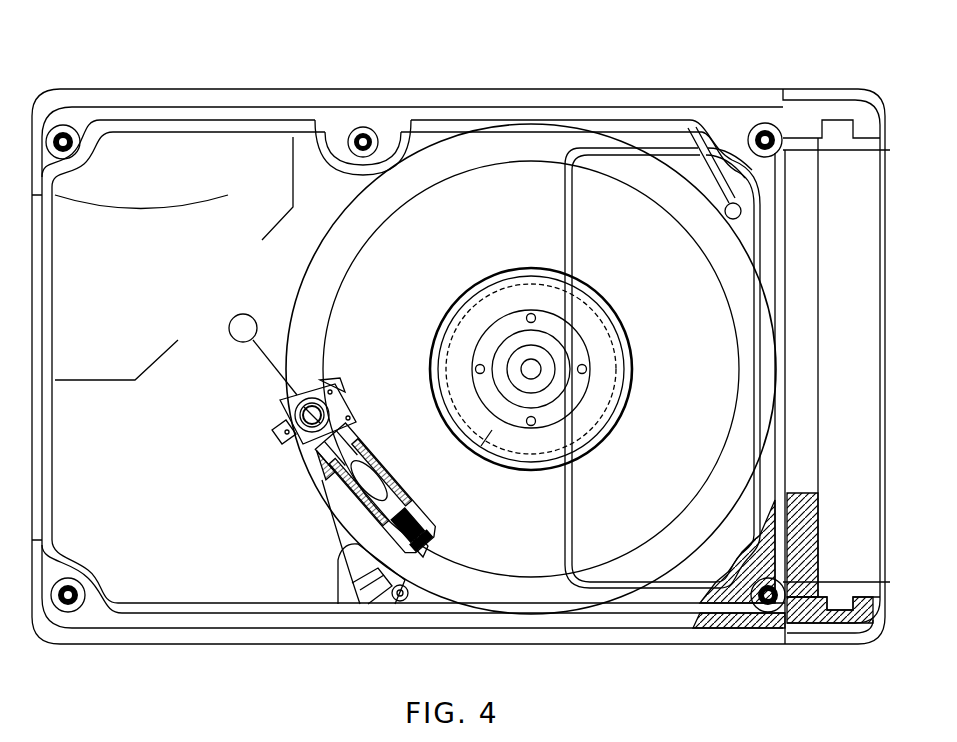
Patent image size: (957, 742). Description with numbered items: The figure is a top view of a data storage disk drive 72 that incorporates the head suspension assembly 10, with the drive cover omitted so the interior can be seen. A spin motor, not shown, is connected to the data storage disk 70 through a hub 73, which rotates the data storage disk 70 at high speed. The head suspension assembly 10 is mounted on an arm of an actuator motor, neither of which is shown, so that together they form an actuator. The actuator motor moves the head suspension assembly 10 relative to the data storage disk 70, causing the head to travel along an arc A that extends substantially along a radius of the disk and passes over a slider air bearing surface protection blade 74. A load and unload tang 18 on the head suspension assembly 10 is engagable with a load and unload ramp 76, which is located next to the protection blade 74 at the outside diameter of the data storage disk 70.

The head suspension assembly 10 is at (417, 437).
The load and unload tang 18 is at (430, 550).
The data storage disk 70 is at (613, 522).
The data storage disk drive 72 is at (397, 77).
The hub 73 is at (602, 382).
The slider air bearing surface protection blade 74 is at (355, 558).
The load and unload ramp 76 is at (400, 567).
The arc A is at (488, 437).